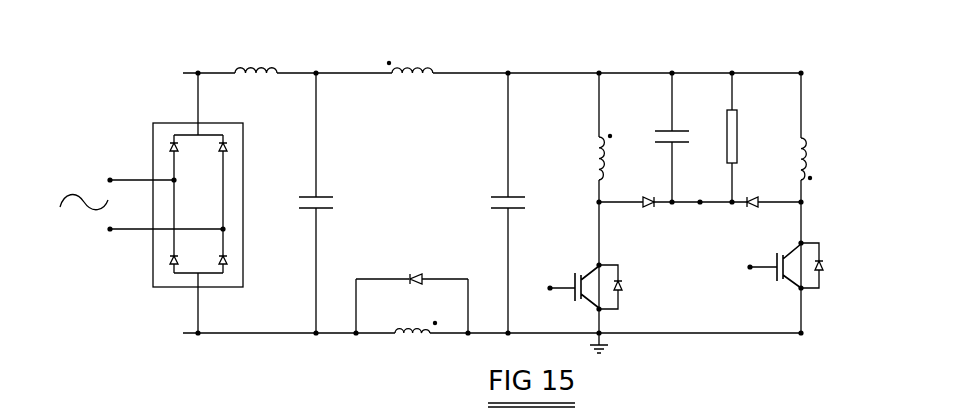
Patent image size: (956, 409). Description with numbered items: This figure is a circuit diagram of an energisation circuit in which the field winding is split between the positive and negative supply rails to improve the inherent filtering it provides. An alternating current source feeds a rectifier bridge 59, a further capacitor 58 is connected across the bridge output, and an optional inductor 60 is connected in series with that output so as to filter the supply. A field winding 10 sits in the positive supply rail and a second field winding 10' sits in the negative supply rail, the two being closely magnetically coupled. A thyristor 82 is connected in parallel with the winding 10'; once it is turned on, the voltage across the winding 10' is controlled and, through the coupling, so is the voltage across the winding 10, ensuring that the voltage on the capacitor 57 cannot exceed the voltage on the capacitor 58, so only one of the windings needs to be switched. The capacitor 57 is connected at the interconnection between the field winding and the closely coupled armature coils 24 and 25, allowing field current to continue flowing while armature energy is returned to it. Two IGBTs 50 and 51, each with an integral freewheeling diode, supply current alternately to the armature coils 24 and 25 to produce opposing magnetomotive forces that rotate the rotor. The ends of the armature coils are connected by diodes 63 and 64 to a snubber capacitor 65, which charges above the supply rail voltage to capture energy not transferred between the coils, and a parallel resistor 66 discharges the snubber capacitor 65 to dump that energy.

The field winding 10 is at (416, 101).
The field winding 10' is at (419, 363).
The armature coil 24 is at (599, 166).
The armature coil 25 is at (806, 150).
The IGBT 50 is at (575, 281).
The IGBT 51 is at (768, 277).
The capacitor 57 is at (498, 196).
The capacitor 58 is at (322, 196).
The rectifier bridge 59 is at (153, 157).
The inductor 60 is at (247, 70).
The diode 63 is at (651, 206).
The diode 64 is at (749, 206).
The snubber capacitor 65 is at (656, 131).
The resistor 66 is at (737, 140).
The thyristor 82 is at (413, 277).